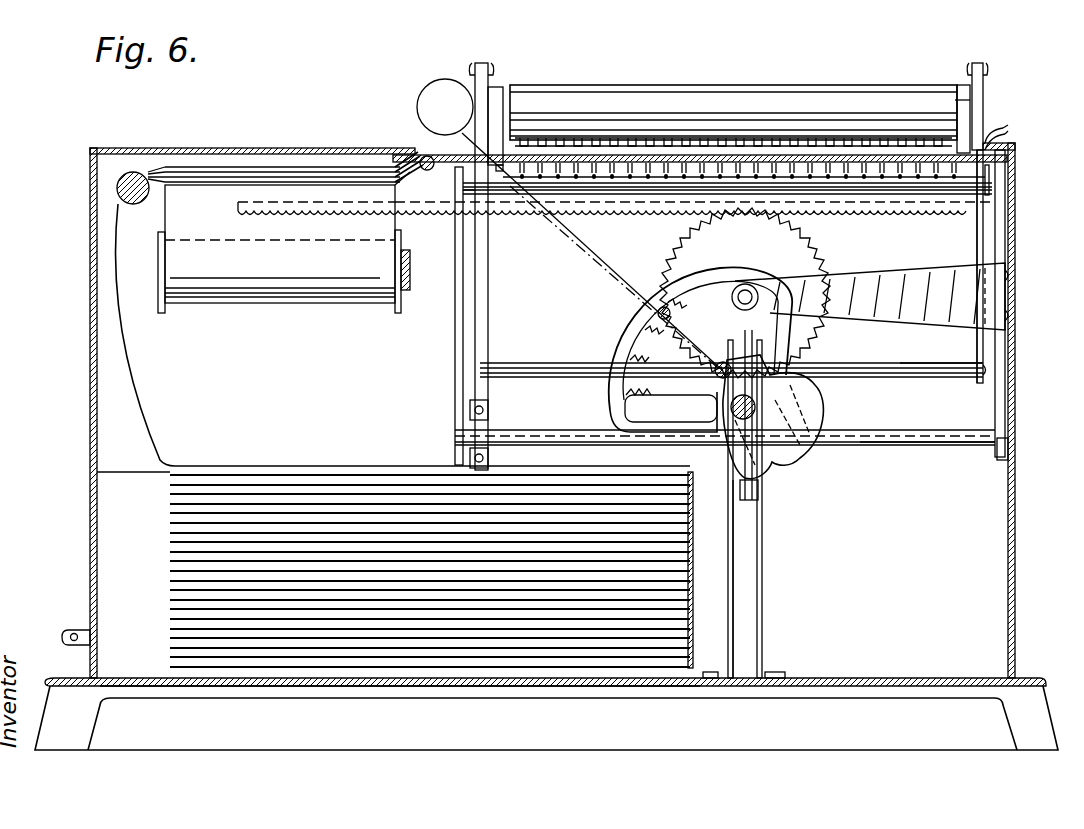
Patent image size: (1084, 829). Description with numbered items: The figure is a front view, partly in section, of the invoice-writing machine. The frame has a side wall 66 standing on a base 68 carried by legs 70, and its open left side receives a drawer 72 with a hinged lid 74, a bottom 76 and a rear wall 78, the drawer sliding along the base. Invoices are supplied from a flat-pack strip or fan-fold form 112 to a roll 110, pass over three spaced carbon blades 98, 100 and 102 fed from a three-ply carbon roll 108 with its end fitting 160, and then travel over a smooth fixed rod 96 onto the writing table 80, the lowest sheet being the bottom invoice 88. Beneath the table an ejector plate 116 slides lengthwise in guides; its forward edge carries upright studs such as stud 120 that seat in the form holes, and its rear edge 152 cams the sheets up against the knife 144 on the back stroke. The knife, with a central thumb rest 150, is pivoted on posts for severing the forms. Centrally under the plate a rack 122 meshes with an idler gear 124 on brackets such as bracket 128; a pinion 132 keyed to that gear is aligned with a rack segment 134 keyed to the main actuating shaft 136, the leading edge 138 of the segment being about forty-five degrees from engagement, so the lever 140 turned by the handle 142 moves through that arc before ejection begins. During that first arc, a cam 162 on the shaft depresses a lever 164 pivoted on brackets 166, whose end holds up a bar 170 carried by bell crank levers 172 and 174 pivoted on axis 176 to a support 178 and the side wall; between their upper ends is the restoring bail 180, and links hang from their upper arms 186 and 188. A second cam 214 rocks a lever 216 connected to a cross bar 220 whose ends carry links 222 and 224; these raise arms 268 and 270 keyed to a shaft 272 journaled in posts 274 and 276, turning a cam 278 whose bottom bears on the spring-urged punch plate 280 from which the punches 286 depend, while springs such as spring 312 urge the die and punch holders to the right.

The side wall 66 is at (1016, 503).
The base 68 is at (884, 678).
The legs 70 is at (85, 724).
The drawer 72 is at (90, 360).
The hinged lid 74 is at (90, 152).
The bottom of drawer 76 is at (305, 686).
The rear wall of drawer 78 is at (700, 587).
The writing table 80 is at (567, 163).
The bottom invoice 88 is at (406, 179).
The fixed rod 96 is at (426, 156).
The carbon blade 98 is at (203, 166).
The carbon blade 100 is at (238, 171).
The carbon blade 102 is at (292, 177).
The carbon roll 108 is at (358, 303).
The roll 110 is at (117, 188).
The flat-pack form 112 is at (322, 462).
The ejector plate 116 is at (673, 216).
The upright stud 120 is at (990, 184).
The rack 122 is at (622, 217).
The idler gear 124 is at (667, 262).
The bracket 128 is at (888, 278).
The pinion 132 is at (746, 283).
The rack segment 134 is at (618, 340).
The main actuating shaft 136 is at (765, 398).
The leading edge 138 is at (671, 312).
The lever 140 is at (560, 240).
The handle 142 is at (428, 90).
The knife 144 is at (1008, 143).
The thumb rest 150 is at (1012, 129).
The rear edge 152 is at (990, 135).
The spool gear 160 is at (410, 256).
The cam 162 is at (777, 455).
The lever 164 is at (770, 500).
The brackets 166 is at (735, 618).
The bar 170 is at (935, 446).
The bell crank lever 172 is at (460, 437).
The bell crank lever 174 is at (1003, 408).
The axis 176 is at (895, 446).
The support 178 is at (490, 408).
The restoring bail 180 is at (466, 218).
The upper arm 186 is at (480, 366).
The upper arm 188 is at (1000, 352).
The cam 214 is at (714, 386).
The lever 216 is at (870, 296).
The cross bar 220 is at (915, 377).
The link 222 is at (488, 298).
The link 224 is at (978, 238).
The arm 268 is at (478, 82).
The arm 270 is at (980, 95).
The shaft 272 is at (972, 108).
The post 274 is at (497, 94).
The post 276 is at (965, 90).
The cam 278 is at (707, 85).
The punch plate 280 is at (785, 138).
The punches 286 is at (896, 140).
The spring 312 is at (852, 196).